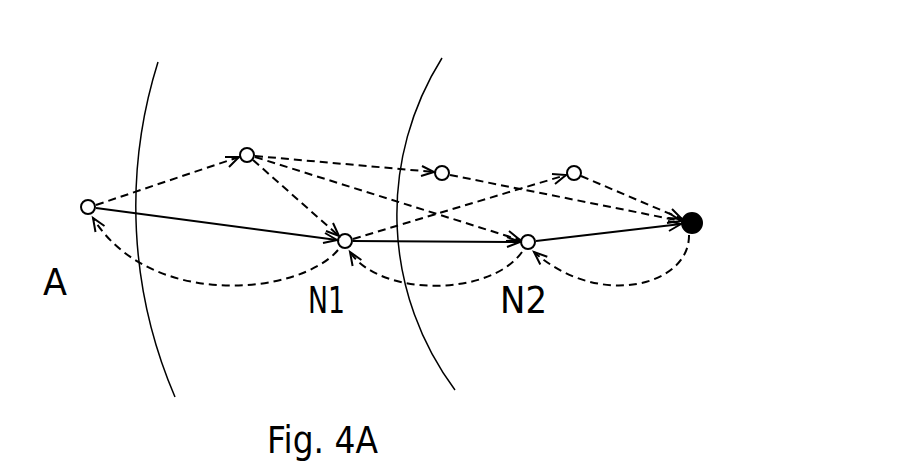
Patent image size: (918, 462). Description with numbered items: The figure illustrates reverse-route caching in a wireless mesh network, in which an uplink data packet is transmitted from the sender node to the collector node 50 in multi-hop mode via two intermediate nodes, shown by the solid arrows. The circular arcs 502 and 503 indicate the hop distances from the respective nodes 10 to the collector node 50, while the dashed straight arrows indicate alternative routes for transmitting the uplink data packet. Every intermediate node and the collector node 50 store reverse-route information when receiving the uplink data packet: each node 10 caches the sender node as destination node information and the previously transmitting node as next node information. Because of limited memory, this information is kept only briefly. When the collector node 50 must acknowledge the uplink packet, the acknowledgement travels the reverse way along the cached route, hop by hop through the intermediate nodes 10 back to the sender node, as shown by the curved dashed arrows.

The circular arc 502 is at (150, 88).
The circular arc 503 is at (430, 83).
The node 10 is at (248, 147).
The collector node 50 is at (704, 229).